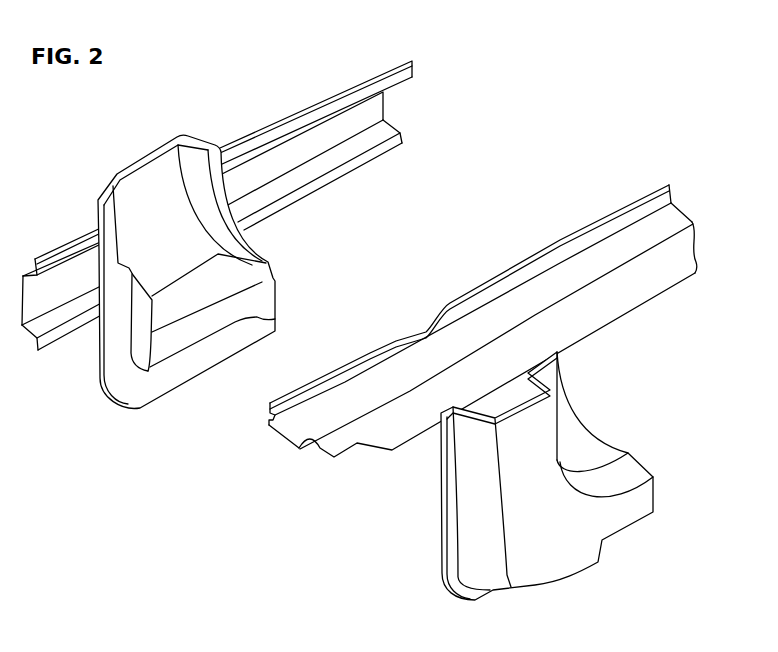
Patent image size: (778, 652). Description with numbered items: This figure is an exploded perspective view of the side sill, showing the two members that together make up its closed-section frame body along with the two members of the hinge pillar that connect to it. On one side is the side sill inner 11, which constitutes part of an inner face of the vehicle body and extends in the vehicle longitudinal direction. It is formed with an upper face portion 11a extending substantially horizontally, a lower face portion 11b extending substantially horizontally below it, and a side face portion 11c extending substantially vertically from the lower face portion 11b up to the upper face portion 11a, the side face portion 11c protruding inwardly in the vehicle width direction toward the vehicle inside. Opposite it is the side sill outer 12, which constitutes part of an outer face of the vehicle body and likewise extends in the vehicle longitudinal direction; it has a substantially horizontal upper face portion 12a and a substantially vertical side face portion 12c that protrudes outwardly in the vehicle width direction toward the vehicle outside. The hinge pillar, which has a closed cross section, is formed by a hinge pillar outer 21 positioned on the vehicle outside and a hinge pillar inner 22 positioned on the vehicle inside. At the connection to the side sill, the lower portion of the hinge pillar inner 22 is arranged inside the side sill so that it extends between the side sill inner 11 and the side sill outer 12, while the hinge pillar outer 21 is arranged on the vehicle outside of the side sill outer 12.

The side sill inner 11 is at (255, 202).
The upper face portion 11a is at (296, 117).
The lower face portion 11b is at (268, 198).
The side face portion 11c is at (283, 163).
The side sill outer 12 is at (483, 307).
The upper face portion 12a is at (628, 243).
The side face portion 12c is at (567, 332).
The hinge pillar outer 21 is at (597, 526).
The hinge pillar inner 22 is at (156, 390).